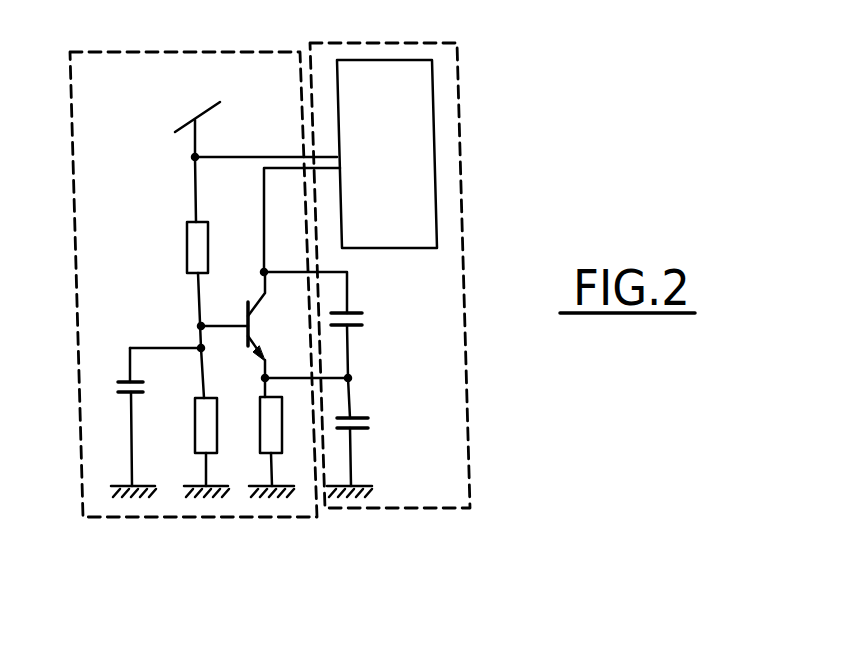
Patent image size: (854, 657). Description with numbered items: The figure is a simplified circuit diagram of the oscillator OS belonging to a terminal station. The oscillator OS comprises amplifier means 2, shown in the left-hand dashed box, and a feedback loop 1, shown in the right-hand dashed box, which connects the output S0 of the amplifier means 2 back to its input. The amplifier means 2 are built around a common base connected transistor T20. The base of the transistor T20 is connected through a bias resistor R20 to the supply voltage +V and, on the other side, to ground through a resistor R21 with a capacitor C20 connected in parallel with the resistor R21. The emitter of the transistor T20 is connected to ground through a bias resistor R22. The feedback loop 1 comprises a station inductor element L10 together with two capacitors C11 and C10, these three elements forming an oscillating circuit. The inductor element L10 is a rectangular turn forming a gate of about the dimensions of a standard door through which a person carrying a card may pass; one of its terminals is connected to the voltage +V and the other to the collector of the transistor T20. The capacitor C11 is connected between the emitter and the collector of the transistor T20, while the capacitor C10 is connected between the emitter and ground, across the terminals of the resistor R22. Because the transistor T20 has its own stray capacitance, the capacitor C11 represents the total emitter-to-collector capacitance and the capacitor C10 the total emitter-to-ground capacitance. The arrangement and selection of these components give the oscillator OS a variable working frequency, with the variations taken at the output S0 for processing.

The feedback loop 1 is at (457, 63).
The amplifier means 2 is at (112, 521).
The oscillator OS is at (490, 160).
The station inductor element L10 is at (432, 113).
The first station capacitor element C11 is at (355, 312).
The second station capacitor element C10 is at (368, 416).
The output of the amplifier means S0 is at (349, 375).
The transistor T20 is at (259, 321).
The bias resistor R20 is at (187, 245).
The resistor R21 is at (195, 442).
The bias resistor R22 is at (282, 445).
The capacitor C20 is at (127, 346).